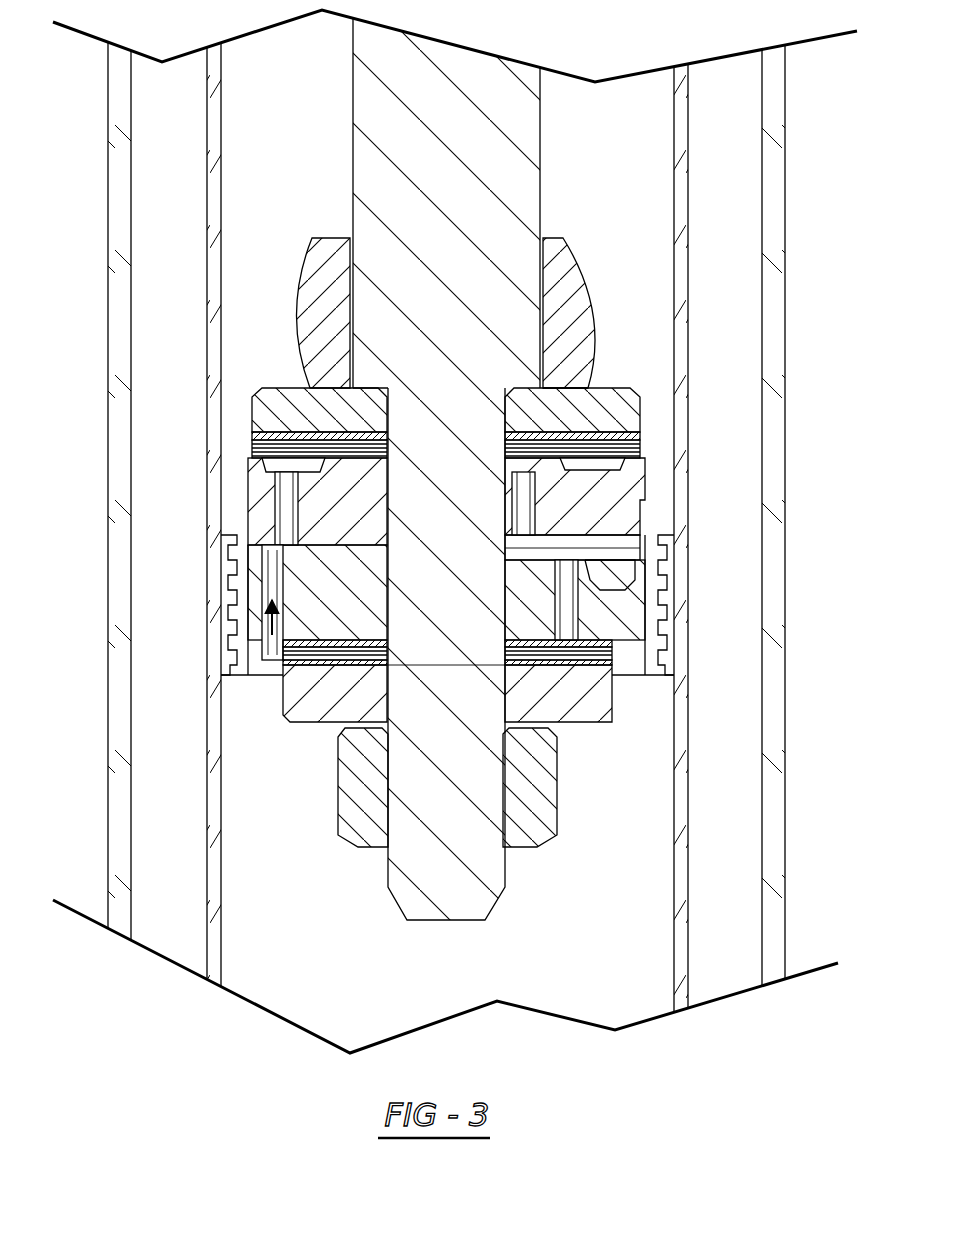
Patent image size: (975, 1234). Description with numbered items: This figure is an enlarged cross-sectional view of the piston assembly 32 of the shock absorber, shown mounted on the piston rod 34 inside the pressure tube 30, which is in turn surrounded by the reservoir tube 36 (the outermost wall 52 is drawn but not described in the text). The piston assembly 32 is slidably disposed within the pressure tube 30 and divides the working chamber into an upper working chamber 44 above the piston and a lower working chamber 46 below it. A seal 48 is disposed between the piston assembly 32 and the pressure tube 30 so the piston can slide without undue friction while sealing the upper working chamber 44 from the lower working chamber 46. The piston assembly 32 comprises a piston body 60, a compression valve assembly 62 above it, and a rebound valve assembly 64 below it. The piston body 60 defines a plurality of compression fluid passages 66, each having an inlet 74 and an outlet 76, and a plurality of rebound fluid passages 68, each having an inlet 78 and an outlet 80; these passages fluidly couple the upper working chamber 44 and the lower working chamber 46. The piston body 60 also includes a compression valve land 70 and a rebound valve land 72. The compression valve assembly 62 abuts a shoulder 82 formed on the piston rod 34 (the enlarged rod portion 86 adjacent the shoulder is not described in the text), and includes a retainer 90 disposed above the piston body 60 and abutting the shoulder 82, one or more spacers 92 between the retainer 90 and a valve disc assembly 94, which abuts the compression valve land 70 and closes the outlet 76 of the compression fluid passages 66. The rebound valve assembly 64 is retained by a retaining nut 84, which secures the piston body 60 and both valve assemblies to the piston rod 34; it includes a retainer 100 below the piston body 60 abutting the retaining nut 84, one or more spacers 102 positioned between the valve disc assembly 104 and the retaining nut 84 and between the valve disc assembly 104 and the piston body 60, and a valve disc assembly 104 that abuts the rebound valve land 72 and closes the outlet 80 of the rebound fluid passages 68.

The pressure tube 30 is at (690, 172).
The piston assembly 32 is at (258, 245).
The piston rod 34 is at (430, 188).
The reservoir tube 36 is at (785, 201).
The upper working chamber 44 is at (287, 126).
The lower working chamber 46 is at (298, 962).
The seal 48 is at (230, 545).
The outer left wall 52 is at (162, 197).
The piston body 60 is at (652, 470).
The compression valve assembly 62 is at (620, 340).
The rebound valve assembly 64 is at (305, 775).
The compression fluid passages 66 is at (288, 500).
The rebound fluid passages 68 is at (528, 512).
The compression valve land 70 is at (262, 462).
The rebound valve land 72 is at (640, 630).
The inlet 74 is at (272, 660).
The outlet 76 is at (315, 465).
The inlet 78 is at (628, 520).
The outlet 80 is at (568, 620).
The shoulder 82 is at (373, 388).
The retaining nut 84 is at (535, 790).
The shaft flange 86 is at (567, 255).
The retainer 90 is at (292, 400).
The spacers 92 is at (570, 430).
The valve disc assembly 94 is at (655, 440).
The retainer 100 is at (585, 690).
The spacers 102 is at (375, 672).
The valve disc assembly 104 is at (625, 665).